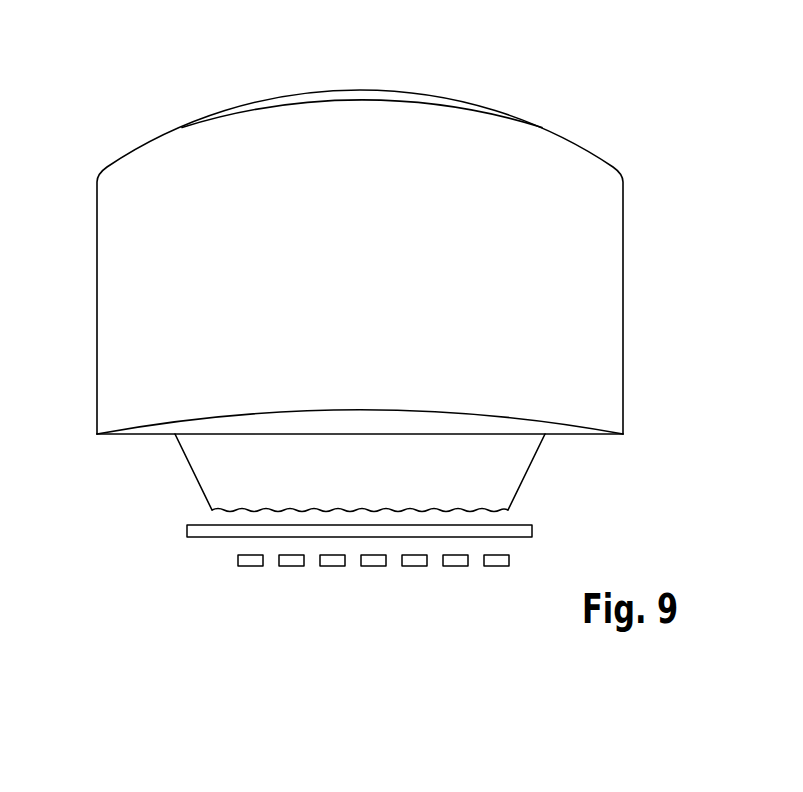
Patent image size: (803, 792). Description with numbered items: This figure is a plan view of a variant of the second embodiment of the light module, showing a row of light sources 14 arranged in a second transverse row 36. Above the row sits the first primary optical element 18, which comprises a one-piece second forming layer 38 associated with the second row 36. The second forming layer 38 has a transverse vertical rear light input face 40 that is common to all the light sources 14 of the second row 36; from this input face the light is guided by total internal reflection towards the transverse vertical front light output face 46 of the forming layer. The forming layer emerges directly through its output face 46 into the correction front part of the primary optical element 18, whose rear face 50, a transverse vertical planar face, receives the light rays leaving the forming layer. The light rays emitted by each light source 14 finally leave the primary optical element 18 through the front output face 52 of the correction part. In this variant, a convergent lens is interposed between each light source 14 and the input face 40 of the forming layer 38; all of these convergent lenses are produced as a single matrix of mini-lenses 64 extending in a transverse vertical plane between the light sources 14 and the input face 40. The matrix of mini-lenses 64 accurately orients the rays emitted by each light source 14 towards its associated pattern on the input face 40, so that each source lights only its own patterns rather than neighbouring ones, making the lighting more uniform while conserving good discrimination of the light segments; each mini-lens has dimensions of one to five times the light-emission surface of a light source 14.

The first primary optical element 18 is at (560, 88).
The front output face 52 is at (404, 91).
The front light output face 46 is at (220, 433).
The rear face 50 is at (577, 435).
The second one-piece forming layer 38 is at (197, 480).
The rear light input face 40 is at (488, 511).
The matrix of mini-lenses 64 is at (187, 530).
The second transverse row 36 is at (317, 600).
The light sources 14 is at (253, 567).